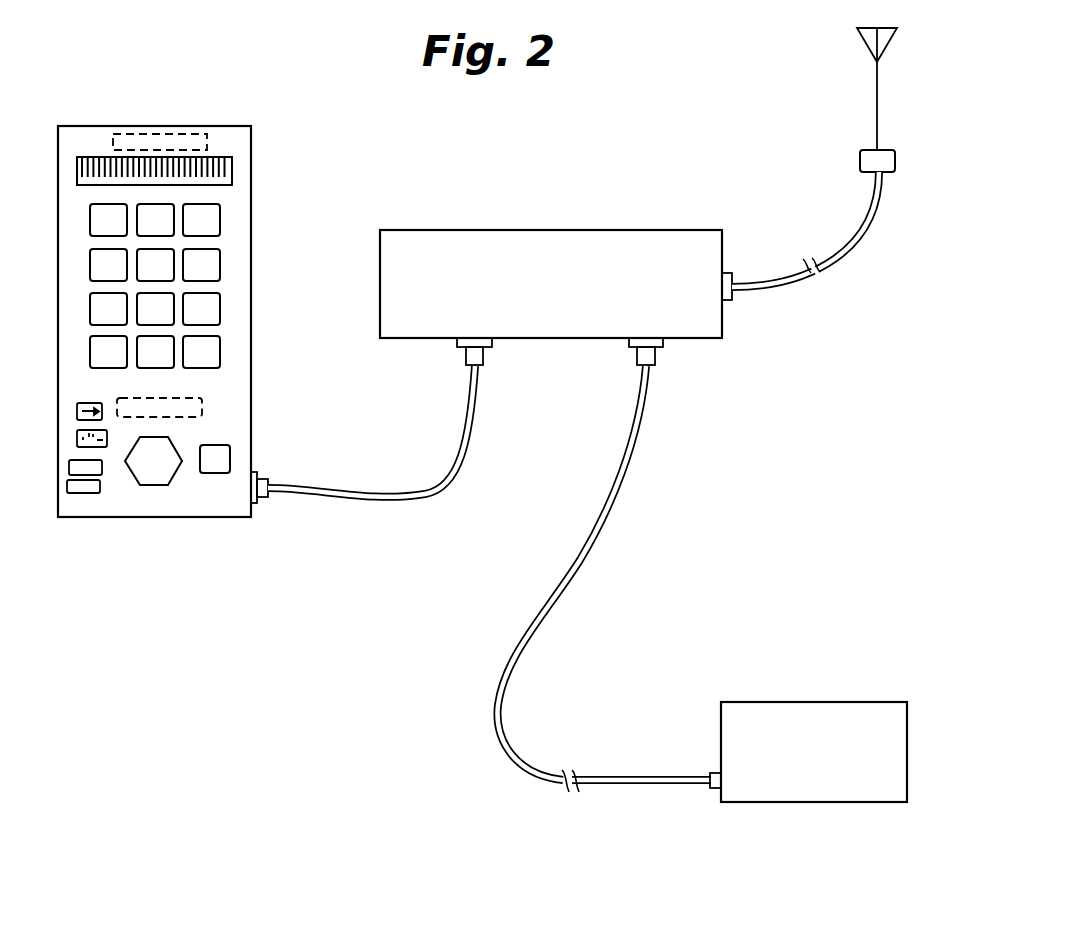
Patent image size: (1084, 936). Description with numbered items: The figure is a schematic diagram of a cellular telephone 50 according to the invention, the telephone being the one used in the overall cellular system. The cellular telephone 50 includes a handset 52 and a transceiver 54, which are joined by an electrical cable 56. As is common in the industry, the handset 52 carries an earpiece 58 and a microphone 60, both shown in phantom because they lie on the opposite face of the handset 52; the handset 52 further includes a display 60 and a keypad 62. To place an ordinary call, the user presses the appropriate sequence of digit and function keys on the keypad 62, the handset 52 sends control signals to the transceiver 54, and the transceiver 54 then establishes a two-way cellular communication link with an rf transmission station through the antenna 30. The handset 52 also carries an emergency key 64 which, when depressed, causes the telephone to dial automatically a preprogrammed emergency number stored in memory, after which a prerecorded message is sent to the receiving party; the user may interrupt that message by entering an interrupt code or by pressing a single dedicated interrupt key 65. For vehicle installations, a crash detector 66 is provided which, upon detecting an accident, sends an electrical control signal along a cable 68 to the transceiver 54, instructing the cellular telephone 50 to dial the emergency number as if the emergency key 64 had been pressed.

The antenna 30 is at (876, 105).
The cellular telephone 50 is at (256, 559).
The handset 52 is at (252, 312).
The transceiver 54 is at (477, 231).
The electrical cable 56 is at (337, 496).
The earpiece 58 is at (208, 138).
The microphone and display 60 is at (231, 167).
The keypad 62 is at (228, 281).
The emergency key 64 is at (152, 483).
The interrupt key 65 is at (217, 474).
The crash detector 66 is at (750, 713).
The cable 68 is at (626, 464).